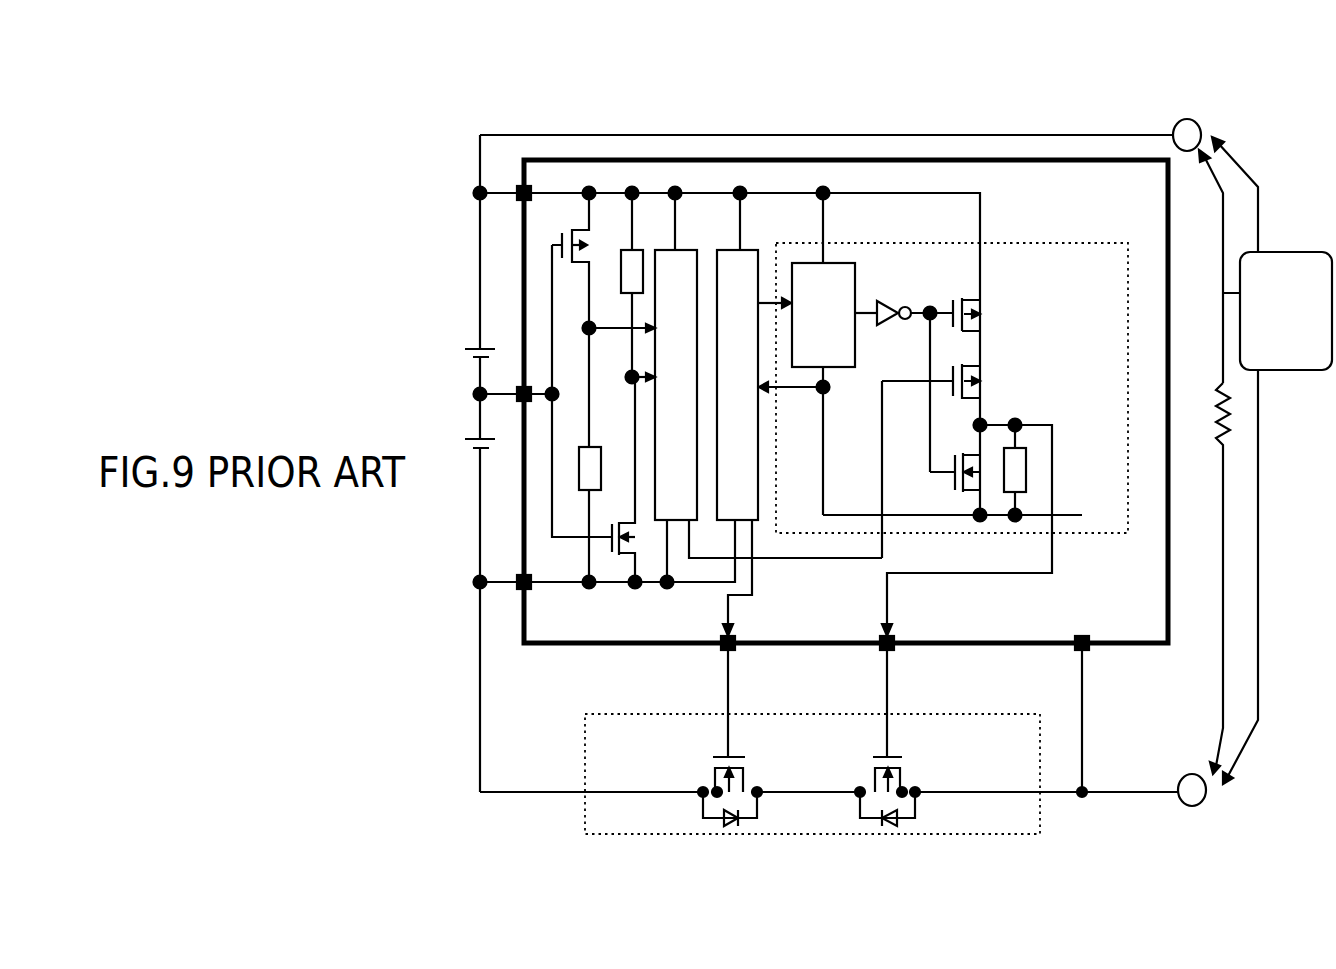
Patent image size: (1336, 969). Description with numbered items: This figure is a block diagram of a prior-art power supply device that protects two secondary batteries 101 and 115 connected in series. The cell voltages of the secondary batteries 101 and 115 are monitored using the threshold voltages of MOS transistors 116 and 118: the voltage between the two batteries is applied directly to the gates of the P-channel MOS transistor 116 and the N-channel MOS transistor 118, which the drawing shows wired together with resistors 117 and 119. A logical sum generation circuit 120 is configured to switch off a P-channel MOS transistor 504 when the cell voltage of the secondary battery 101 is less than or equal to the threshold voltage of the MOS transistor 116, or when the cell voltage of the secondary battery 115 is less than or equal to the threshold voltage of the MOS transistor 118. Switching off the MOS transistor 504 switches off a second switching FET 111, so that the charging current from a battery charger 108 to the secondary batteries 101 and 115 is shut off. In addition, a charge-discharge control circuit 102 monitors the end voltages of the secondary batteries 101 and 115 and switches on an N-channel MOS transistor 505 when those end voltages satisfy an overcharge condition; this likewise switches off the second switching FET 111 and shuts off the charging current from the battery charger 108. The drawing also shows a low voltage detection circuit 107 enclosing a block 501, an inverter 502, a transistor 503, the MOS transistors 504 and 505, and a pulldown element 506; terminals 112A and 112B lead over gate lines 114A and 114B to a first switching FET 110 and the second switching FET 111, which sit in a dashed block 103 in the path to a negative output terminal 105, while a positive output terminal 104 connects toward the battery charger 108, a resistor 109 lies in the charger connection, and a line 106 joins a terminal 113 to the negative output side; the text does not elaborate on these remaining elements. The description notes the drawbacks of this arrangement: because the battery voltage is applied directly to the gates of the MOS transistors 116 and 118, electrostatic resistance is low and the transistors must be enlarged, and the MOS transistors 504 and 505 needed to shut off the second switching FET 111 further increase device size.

The secondary battery 101 is at (470, 346).
The charge-discharge control circuit 102 is at (746, 250).
The switch circuit 103 is at (753, 774).
The positive output terminal +VO 104 is at (1195, 115).
The negative output terminal -VO 105 is at (1218, 800).
The connection line to terminal 113 106 is at (1085, 748).
The low voltage detection circuit 107 is at (1080, 244).
The battery charger 108 is at (1222, 290).
The resistor (load) 109 is at (1213, 400).
The FET-A switching transistor 110 is at (705, 775).
The FET-B 111 is at (918, 773).
The output terminal for FET-A gate 112A is at (740, 627).
The output terminal for FET-B gate 112B is at (900, 627).
The voltage detection terminal 113 is at (1085, 635).
The gate line of FET-A 114A is at (733, 684).
The gate line of FET-B 114B is at (890, 684).
The secondary battery 115 is at (470, 439).
The P-channel MOS transistor 116 is at (552, 228).
The resistor 117 is at (582, 490).
The N-channel MOS transistor 118 is at (635, 540).
The resistor 119 is at (642, 247).
The logical sum generation circuit 120 is at (688, 248).
The delay circuit 501 is at (823, 354).
The inverter 502 is at (904, 300).
The transistor 503 is at (997, 314).
The P-channel MOS transistor 504 is at (961, 435).
The N-channel MOS transistor 505 is at (943, 470).
The pulldown element (resistor) 506 is at (1026, 478).